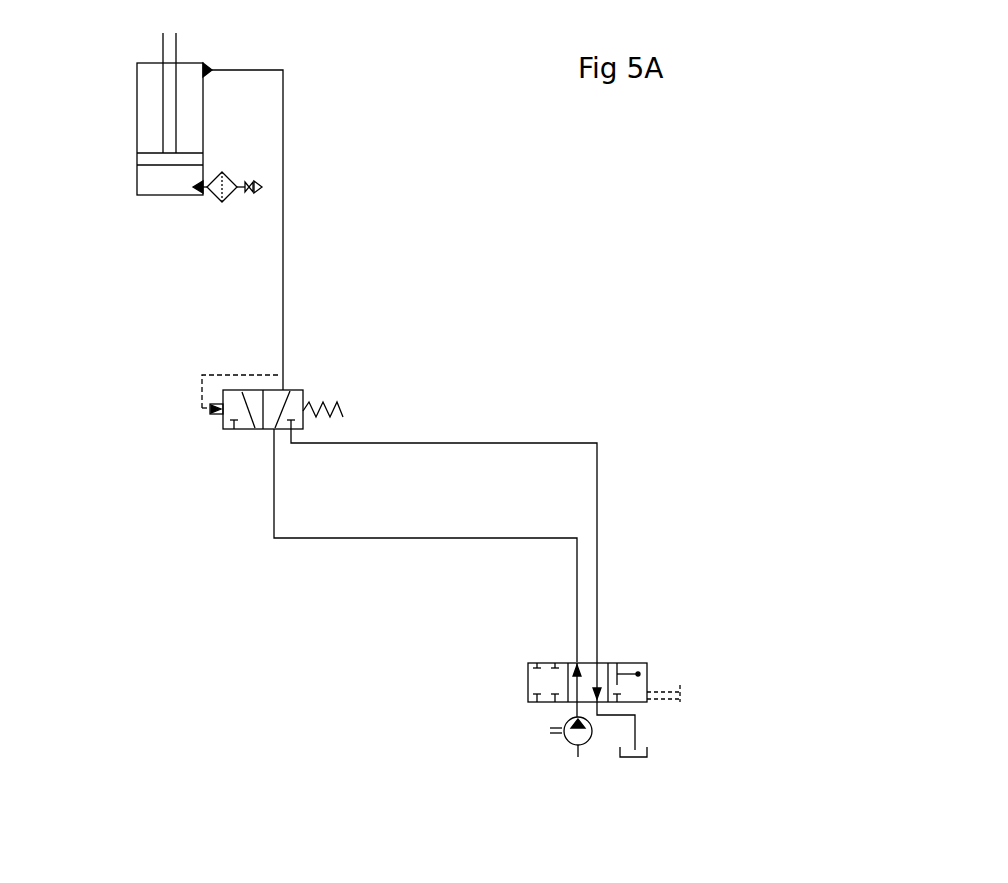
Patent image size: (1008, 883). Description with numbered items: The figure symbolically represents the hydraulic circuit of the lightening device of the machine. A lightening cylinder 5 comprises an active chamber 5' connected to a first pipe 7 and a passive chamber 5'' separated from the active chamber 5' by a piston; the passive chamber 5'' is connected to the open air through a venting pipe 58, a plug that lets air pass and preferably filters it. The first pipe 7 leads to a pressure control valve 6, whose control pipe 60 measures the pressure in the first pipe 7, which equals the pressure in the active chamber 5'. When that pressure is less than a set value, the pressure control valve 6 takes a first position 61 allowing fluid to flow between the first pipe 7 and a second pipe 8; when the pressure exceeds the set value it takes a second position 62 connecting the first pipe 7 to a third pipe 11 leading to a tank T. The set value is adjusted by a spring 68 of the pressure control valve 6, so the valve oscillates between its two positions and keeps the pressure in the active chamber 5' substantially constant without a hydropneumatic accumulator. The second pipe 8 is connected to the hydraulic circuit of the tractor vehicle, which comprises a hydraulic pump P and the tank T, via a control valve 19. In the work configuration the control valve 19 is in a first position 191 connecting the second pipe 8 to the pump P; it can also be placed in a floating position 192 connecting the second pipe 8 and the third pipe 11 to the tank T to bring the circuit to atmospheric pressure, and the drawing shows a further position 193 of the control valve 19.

The lightening cylinder 5 is at (138, 147).
The active chamber 5' is at (124, 93).
The passive chamber 5'' is at (138, 239).
The venting pipe 58 is at (196, 239).
The first pipe 7 is at (283, 229).
The pressure control valve 6 is at (281, 368).
The control pipe 60 is at (250, 377).
The first position 61 is at (290, 392).
The second position 62 is at (237, 390).
The spring 68 is at (356, 375).
The second pipe 8 is at (415, 538).
The third pipe 11 is at (487, 589).
The control valve 19 is at (618, 604).
The first position 191 is at (587, 662).
The floating position 192 is at (627, 662).
The third valve position of directional valve 193 is at (552, 662).
The hydraulic pump P is at (568, 735).
The tank T is at (648, 750).